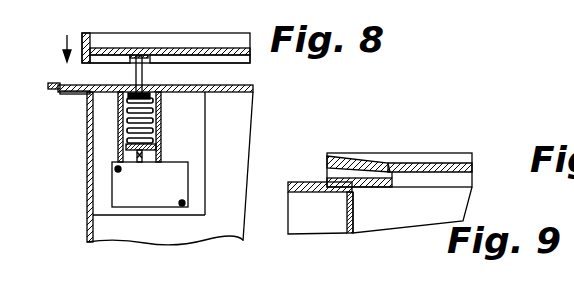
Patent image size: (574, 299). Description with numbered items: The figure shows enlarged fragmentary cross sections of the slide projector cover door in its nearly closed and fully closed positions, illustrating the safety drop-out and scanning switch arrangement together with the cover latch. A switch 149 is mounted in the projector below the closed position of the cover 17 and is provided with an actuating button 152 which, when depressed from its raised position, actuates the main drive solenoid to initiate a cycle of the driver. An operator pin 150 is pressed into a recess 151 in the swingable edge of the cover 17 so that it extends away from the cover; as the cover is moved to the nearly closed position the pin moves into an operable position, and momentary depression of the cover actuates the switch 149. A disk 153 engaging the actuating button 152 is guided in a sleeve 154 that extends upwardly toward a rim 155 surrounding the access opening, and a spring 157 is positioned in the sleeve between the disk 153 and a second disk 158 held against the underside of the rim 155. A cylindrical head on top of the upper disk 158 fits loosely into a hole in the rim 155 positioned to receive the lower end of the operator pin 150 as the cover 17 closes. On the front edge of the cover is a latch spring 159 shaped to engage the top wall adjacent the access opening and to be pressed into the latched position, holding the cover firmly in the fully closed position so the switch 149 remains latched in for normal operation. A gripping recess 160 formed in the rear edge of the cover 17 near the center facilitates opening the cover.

In FIG. 8, the cover 17 is at (175, 52).
In FIG. 9, the cover 17 is at (417, 165).
In FIG. 8, the switch 149 is at (154, 194).
In FIG. 8, the operator pin 150 is at (134, 73).
In FIG. 8, the recess 151 is at (148, 64).
In FIG. 8, the actuating button 152 is at (144, 158).
In FIG. 8, the disk 153 is at (128, 152).
In FIG. 8, the sleeve 154 is at (167, 122).
In FIG. 8, the rim 155 is at (196, 84).
In FIG. 8, the spring 157 is at (123, 136).
In FIG. 8, the second disk 158 is at (123, 108).
In FIG. 9, the latch spring 159 is at (355, 199).
In FIG. 9, the gripping recess 160 is at (333, 157).